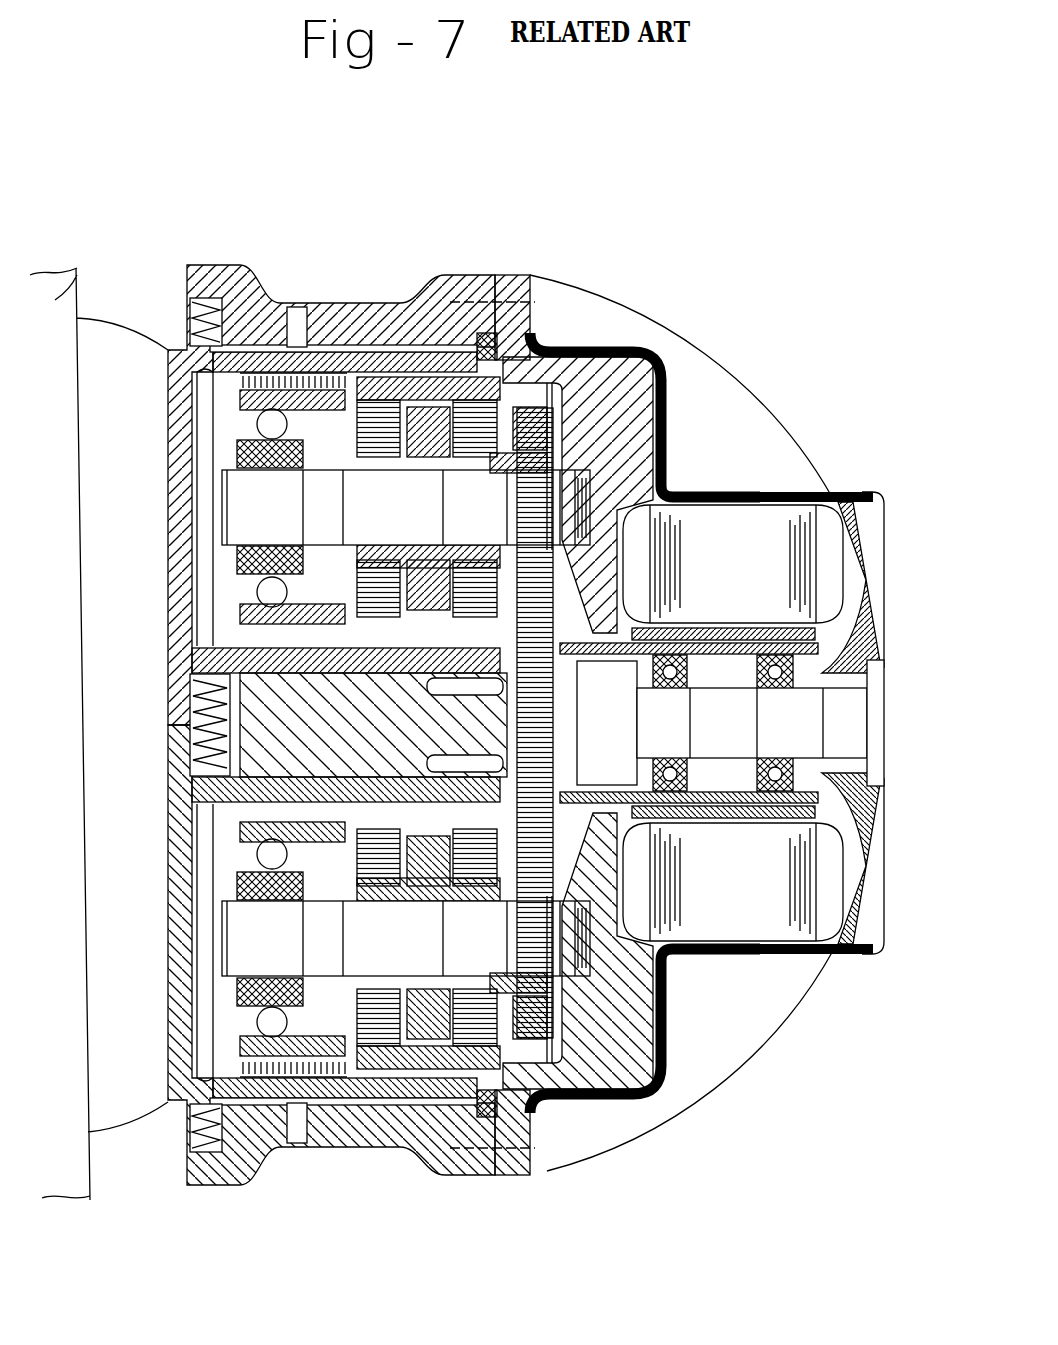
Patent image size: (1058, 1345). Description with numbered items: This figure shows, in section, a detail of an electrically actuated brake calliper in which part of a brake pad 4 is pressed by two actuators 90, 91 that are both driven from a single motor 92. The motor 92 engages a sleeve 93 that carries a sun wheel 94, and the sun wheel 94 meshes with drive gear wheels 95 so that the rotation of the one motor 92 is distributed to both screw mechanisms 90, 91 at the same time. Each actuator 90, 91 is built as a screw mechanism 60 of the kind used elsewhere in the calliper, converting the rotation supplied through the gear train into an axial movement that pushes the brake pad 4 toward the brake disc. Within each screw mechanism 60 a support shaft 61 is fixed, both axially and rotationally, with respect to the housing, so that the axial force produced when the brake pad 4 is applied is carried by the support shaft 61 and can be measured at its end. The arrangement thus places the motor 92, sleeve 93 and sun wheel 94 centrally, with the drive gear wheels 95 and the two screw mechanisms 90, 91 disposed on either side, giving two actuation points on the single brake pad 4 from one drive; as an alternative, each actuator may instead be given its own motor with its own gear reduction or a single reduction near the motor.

The brake pad 4 is at (77, 284).
The screw mechanism 60 is at (612, 500).
The support shaft 61 is at (500, 500).
The actuator 90 is at (630, 300).
The actuator 91 is at (383, 1160).
The motor 92 is at (853, 490).
The sleeve 93 is at (820, 837).
The sun wheel 94 is at (556, 778).
The drive gear wheels 95 is at (550, 400).